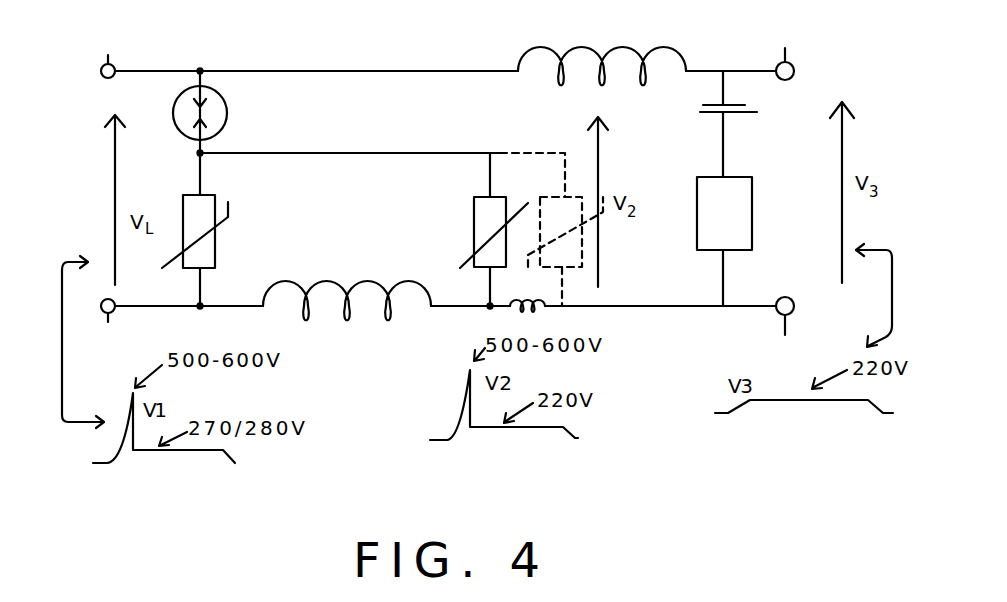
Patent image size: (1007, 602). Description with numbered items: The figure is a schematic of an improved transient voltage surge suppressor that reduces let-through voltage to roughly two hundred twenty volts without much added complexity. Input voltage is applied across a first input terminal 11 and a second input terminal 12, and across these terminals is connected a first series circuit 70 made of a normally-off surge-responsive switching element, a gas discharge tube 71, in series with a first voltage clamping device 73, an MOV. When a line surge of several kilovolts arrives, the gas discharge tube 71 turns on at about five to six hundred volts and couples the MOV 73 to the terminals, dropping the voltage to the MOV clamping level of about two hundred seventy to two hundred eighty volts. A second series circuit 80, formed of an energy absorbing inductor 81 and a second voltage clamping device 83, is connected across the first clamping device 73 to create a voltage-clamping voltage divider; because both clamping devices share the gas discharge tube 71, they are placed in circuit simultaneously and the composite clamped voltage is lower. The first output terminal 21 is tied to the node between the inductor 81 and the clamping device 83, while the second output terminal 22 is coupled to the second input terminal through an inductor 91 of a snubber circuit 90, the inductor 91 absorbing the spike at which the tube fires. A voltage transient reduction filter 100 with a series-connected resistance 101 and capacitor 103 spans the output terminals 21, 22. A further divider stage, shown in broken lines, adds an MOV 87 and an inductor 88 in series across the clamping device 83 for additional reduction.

The first input terminal 11 is at (113, 53).
The second input terminal 12 is at (114, 330).
The first output terminal 21 is at (787, 53).
The second output terminal 22 is at (787, 332).
The first series circuit 70 is at (170, 173).
The gas discharge tube 71 is at (227, 113).
The first voltage clamping device 73 is at (215, 242).
The second series circuit 80 is at (348, 217).
The first electrical energy absorbing impedance element 81 is at (357, 277).
The second voltage clamping device 83 is at (474, 217).
The non-linear voltage clamping element 87 is at (573, 243).
The inductor 88 is at (531, 295).
The snubber circuit 90 is at (658, 130).
The inductor 91 is at (617, 46).
The voltage transient reduction filter 100 is at (723, 188).
The resistance 101 is at (749, 116).
The capacitor 103 is at (761, 213).